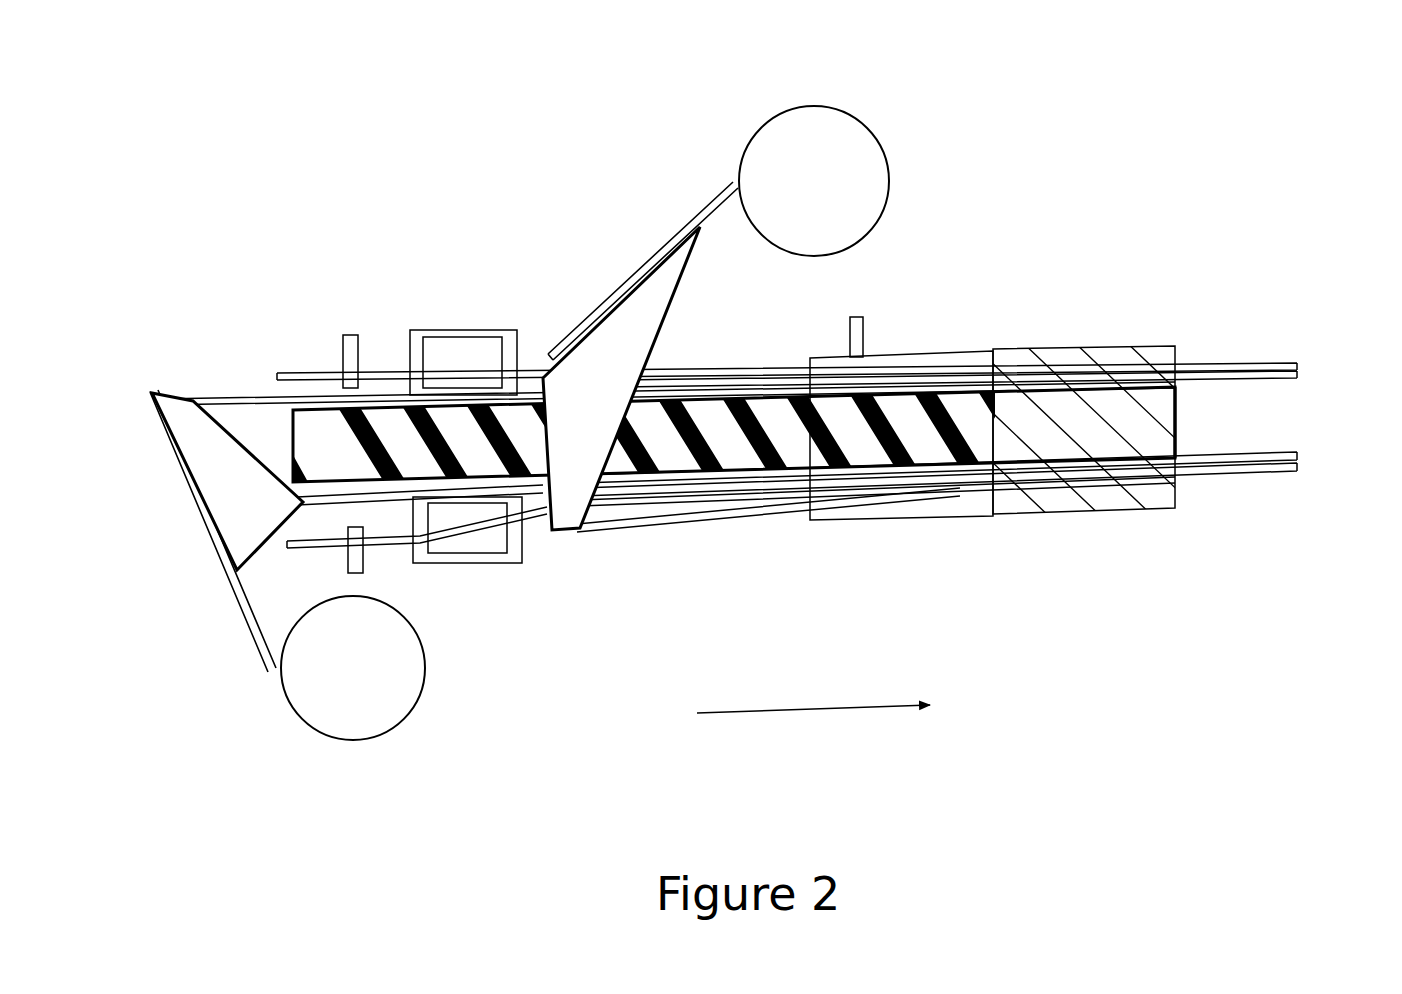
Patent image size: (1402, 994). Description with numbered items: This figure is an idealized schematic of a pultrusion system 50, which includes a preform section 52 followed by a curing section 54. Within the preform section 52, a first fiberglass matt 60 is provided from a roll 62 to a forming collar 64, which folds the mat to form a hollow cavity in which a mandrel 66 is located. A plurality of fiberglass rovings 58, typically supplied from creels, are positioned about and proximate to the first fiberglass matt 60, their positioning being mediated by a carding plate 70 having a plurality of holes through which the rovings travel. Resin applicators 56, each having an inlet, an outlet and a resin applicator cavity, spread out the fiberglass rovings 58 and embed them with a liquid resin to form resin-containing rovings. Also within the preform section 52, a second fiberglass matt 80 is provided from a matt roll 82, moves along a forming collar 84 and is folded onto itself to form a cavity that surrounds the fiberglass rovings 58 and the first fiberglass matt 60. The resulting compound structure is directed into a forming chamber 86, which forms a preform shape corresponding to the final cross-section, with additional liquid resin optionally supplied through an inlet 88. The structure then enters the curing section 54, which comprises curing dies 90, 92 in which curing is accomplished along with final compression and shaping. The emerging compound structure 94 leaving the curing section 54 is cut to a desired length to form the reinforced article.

The pultrusion system 50 is at (1122, 122).
The preform section 52 is at (318, 185).
The curing section 54 is at (1063, 232).
The resin applicators 56 is at (480, 343).
The fiberglass rovings 58 is at (1295, 370).
The first fiberglass matt 60 is at (1297, 450).
The roll 62 is at (655, 478).
The forming collar 64 is at (228, 483).
The mandrel 66 is at (372, 430).
The carding plate 70 is at (350, 335).
The second fiberglass matt 80 is at (678, 237).
The matt roll 82 is at (805, 143).
The forming collar 84 is at (676, 298).
The forming chamber 86 is at (908, 505).
The inlet 88 is at (860, 317).
The curing die 90 is at (1100, 505).
The curing die 92 is at (1070, 420).
The emerging compound structure 94 is at (1197, 293).